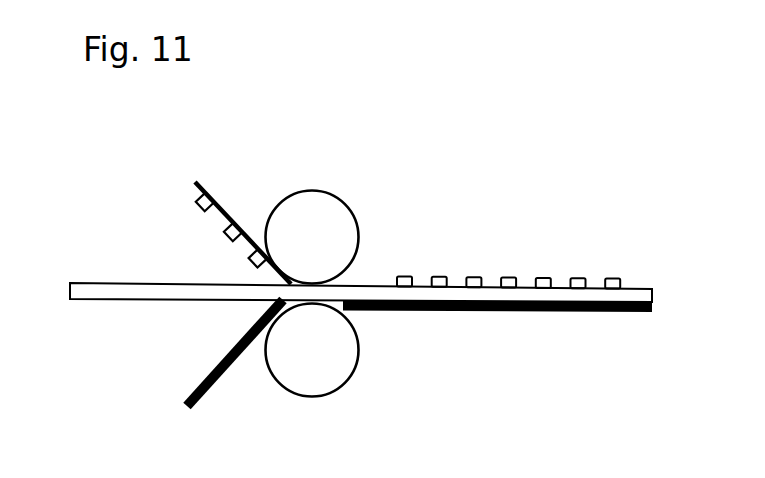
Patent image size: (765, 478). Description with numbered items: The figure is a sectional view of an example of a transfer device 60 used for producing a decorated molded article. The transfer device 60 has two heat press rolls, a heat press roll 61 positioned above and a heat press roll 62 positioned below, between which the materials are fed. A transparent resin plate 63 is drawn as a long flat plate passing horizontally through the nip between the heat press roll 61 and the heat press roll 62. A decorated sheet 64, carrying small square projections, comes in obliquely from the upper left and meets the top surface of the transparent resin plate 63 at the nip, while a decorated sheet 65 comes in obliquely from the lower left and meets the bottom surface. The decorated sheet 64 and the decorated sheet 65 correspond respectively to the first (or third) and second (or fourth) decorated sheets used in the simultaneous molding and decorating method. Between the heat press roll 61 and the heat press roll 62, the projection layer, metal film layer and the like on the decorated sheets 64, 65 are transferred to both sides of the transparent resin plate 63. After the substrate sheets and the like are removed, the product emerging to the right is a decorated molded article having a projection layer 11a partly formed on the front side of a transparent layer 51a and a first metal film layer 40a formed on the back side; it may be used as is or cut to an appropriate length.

The transfer device 60 is at (296, 158).
The heat press roll 61 is at (327, 210).
The heat press roll 62 is at (335, 369).
The transparent resin plate 63 is at (102, 292).
The decorated sheet 64 is at (234, 214).
The decorated sheet 65 is at (217, 379).
The projection layer 11a is at (478, 277).
The first metal film layer 40a is at (495, 312).
The transparent layer 51a is at (598, 295).